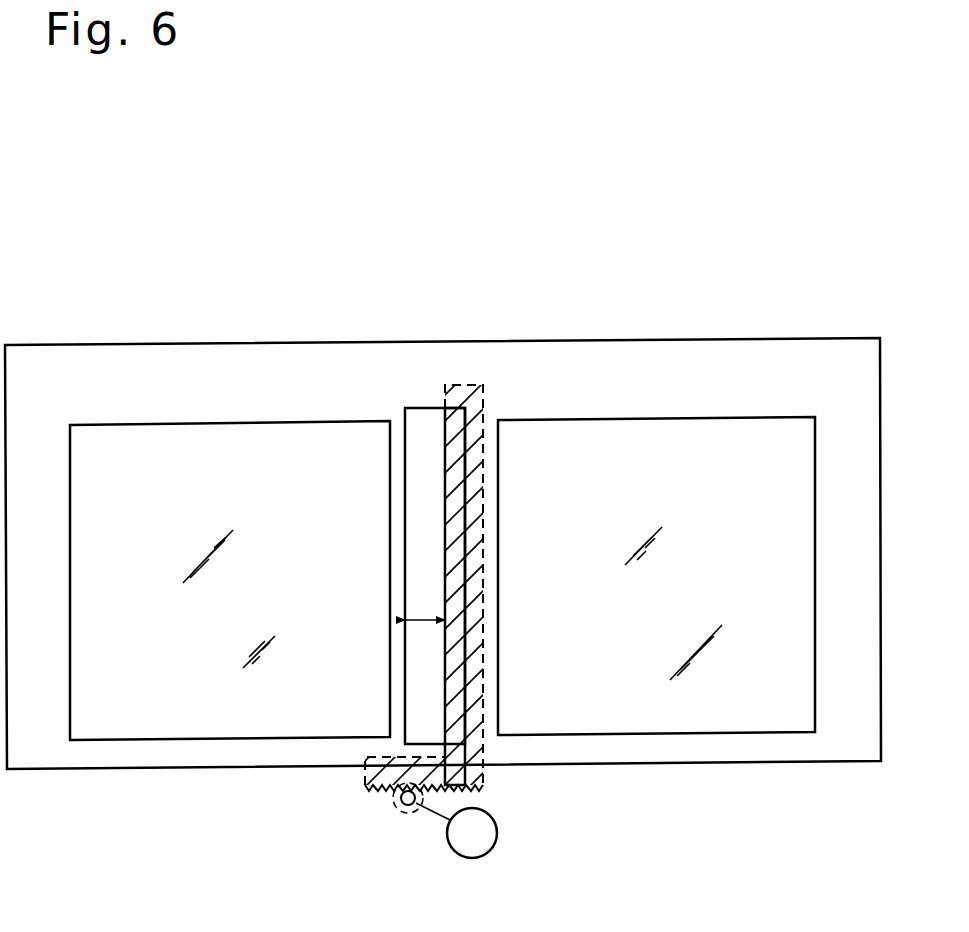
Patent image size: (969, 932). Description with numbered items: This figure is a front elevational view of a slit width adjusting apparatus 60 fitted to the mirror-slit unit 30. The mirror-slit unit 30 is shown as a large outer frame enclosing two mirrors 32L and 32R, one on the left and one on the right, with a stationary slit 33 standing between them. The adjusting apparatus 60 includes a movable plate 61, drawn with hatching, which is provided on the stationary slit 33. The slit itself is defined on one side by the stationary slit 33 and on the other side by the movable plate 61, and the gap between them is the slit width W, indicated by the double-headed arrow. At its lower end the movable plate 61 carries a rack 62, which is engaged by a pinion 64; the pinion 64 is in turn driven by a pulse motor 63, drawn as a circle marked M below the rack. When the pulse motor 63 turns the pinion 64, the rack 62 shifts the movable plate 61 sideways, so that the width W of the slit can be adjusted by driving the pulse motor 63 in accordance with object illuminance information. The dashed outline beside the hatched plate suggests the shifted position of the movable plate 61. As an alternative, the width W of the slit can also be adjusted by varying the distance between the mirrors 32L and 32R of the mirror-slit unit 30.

The mirror-slit unit 30 is at (812, 762).
The left mirror 32L is at (245, 722).
The right mirror 32R is at (715, 722).
The stationary slit 33 is at (405, 533).
The slit width adjusting apparatus 60 is at (458, 642).
The movable plate 61 is at (453, 553).
The rack 62 is at (376, 788).
The pulse motor 63 is at (473, 858).
The pinion 64 is at (410, 809).
The slit width W is at (407, 630).